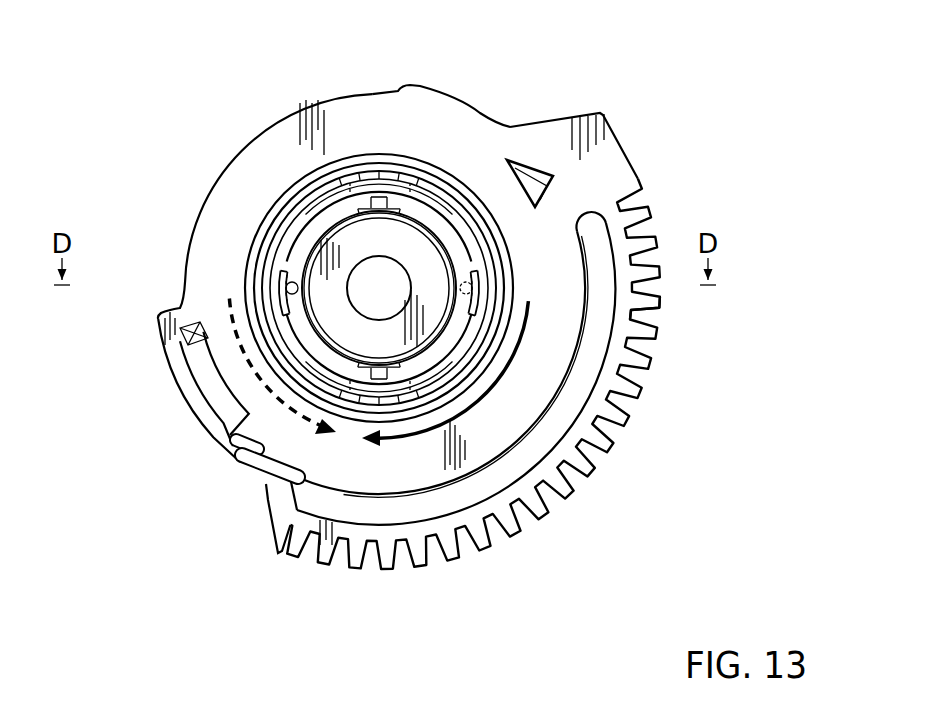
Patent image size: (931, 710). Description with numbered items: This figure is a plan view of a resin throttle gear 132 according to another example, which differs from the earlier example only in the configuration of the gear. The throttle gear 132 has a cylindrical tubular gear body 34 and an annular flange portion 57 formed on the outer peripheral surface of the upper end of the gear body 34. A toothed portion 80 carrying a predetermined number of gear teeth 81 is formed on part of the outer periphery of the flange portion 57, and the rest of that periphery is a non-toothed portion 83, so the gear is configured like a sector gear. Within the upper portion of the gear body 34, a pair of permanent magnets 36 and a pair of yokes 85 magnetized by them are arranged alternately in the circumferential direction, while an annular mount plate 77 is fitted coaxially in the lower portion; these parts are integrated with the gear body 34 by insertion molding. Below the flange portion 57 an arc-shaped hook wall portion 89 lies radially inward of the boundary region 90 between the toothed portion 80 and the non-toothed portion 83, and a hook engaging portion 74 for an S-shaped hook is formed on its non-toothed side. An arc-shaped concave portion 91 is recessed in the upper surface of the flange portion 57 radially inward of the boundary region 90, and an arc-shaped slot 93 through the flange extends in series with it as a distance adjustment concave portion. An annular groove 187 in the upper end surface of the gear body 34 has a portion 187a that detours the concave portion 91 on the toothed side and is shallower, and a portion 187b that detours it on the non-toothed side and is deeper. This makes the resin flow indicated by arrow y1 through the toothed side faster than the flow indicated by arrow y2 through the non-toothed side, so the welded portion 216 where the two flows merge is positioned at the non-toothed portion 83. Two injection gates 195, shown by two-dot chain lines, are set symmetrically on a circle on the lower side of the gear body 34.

The gear body 34 is at (463, 223).
The permanent magnets 36 is at (379, 196).
The flange portion 57 is at (203, 273).
The hook engaging portion 74 is at (236, 445).
The mount plate 77 is at (327, 233).
The toothed portion 80 is at (642, 375).
The gear teeth 81 is at (647, 313).
The non-toothed portion 83 is at (290, 120).
The yokes 85 is at (465, 225).
The hook wall portion 89 is at (383, 503).
The boundary region 90 is at (265, 488).
The concave portion 91 is at (252, 464).
The slot 93 is at (183, 308).
The throttle gear 132 is at (497, 108).
The annular groove 187 is at (400, 178).
The portion of the annular groove 187a is at (455, 390).
The portion of the annular groove 187b is at (283, 358).
The injection gates 195 is at (290, 275).
The welded portion 216 is at (292, 522).
The arrow y1 is at (507, 382).
The arrow y2 is at (243, 352).